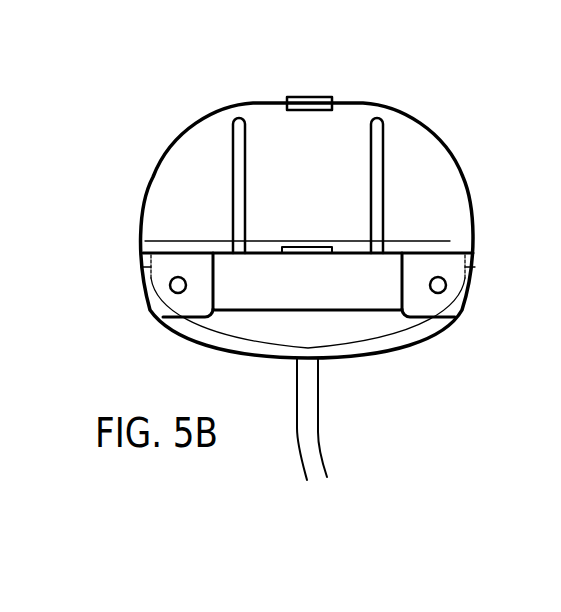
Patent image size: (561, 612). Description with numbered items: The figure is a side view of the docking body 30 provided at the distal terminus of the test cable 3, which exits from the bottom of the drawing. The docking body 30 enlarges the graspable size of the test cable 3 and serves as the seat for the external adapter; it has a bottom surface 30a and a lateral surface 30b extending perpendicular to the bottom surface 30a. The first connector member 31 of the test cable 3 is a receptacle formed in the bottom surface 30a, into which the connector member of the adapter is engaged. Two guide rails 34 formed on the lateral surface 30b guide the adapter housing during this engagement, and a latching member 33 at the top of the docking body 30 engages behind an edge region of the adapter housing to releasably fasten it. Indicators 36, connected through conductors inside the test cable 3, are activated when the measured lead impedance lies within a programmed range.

The test cable 3 is at (345, 423).
The docking body 30 is at (418, 117).
The bottom surface 30a is at (445, 252).
The lateral surface 30b is at (458, 222).
The first connector member 31 is at (312, 247).
The latching member 33 is at (308, 97).
The guide rail 34 is at (245, 193).
The indicator 36 is at (175, 285).